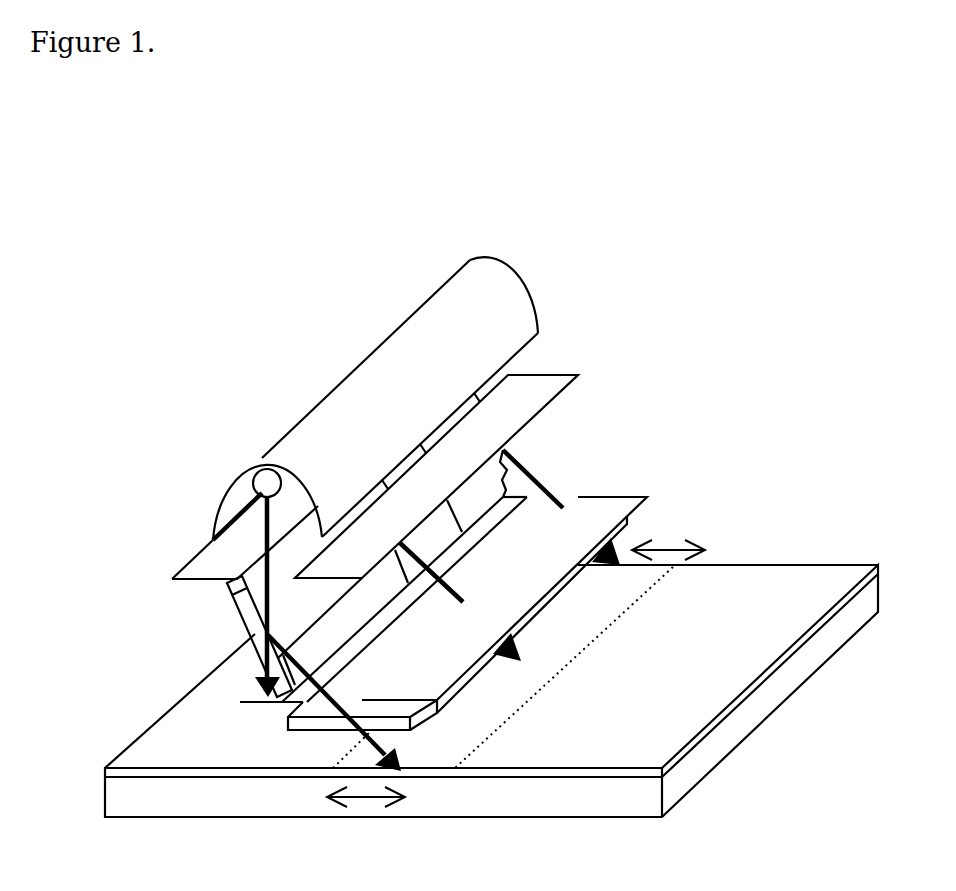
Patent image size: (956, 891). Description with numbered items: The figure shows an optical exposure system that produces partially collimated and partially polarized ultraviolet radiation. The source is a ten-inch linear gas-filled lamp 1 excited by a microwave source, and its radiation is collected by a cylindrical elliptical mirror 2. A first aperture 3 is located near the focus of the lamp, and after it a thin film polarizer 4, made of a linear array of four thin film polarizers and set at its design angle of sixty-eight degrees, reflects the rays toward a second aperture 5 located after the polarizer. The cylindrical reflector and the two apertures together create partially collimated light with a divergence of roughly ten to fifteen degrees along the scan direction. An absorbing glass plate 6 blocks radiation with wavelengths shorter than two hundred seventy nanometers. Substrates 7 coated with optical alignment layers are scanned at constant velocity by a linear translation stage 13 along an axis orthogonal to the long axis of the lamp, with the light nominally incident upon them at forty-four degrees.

The linear gas-filled lamp 1 is at (257, 458).
The cylindrical elliptical mirror 2 is at (387, 343).
The first aperture 3 is at (327, 565).
The thin film polarizer 4 is at (255, 595).
The second aperture 5 is at (507, 453).
The absorbing glass plate 6 is at (320, 705).
The substrates 7 is at (600, 742).
The linear translation stage 13 is at (708, 740).